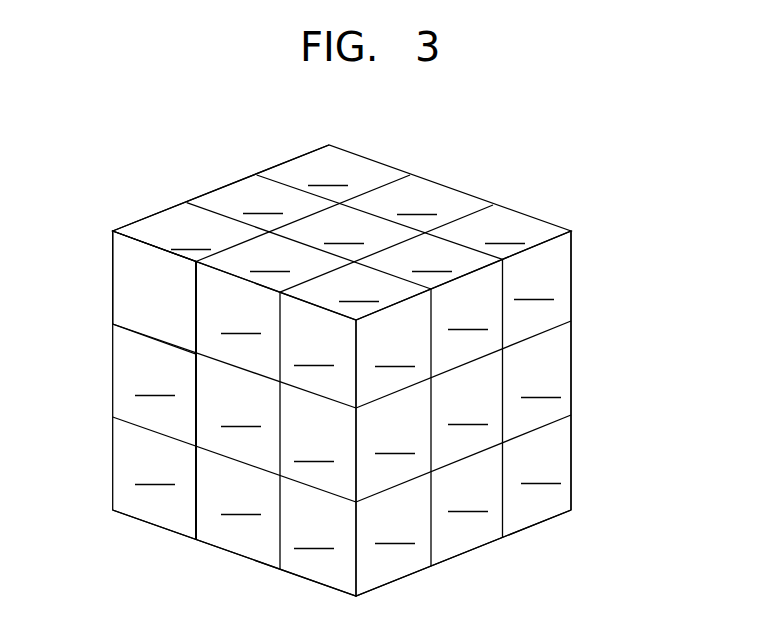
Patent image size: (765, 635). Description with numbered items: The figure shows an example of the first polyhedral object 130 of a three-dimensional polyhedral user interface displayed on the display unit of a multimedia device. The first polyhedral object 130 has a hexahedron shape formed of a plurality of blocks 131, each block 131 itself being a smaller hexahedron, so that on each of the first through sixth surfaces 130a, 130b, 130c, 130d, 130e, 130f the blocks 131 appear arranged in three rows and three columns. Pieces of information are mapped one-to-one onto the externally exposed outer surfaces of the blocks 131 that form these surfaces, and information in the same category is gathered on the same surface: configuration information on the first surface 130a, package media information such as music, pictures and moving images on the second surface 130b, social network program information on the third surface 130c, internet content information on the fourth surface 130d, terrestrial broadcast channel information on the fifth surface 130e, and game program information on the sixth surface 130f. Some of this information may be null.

The first polyhedral object 130 is at (370, 354).
The first surface 130a is at (203, 413).
The second surface 130b is at (563, 402).
The third surface 130c is at (573, 298).
The fourth surface 130d is at (244, 180).
The fifth surface 130e is at (513, 218).
The sixth surface 130f is at (493, 545).
The block 131 is at (119, 287).